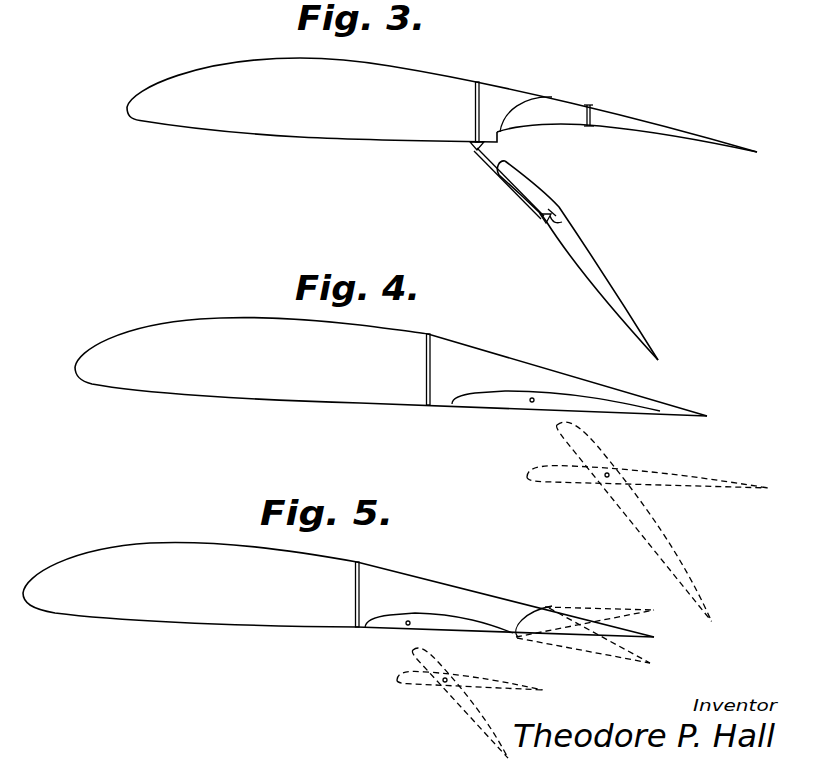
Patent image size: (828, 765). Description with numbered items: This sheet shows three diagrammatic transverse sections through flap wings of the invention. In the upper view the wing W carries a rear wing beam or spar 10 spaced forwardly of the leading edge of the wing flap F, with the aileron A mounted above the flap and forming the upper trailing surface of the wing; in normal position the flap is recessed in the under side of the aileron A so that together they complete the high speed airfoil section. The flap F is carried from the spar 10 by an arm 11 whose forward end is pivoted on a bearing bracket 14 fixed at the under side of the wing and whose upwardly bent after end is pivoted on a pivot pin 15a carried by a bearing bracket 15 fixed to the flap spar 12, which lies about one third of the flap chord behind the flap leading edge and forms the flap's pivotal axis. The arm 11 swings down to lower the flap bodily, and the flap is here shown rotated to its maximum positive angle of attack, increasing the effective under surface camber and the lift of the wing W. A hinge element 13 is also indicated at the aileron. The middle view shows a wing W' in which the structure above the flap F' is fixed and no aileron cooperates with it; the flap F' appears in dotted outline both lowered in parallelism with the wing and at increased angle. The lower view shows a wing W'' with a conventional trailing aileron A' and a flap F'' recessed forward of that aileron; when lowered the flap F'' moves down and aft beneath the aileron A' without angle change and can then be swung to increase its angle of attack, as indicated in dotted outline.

In FIG. 3, the wing W is at (442, 97).
In FIG. 3, the aileron A is at (627, 116).
In FIG. 3, the rear wing beam or spar 10 is at (475, 105).
In FIG. 3, the arm 11 is at (500, 178).
In FIG. 3, the spar 12 is at (552, 217).
In FIG. 3, the hinge 13 is at (567, 63).
In FIG. 3, the pivot or bearing bracket 14 is at (473, 147).
In FIG. 3, the bearing bracket 15 is at (541, 220).
In FIG. 3, the pivot pin 15a is at (548, 208).
In FIG. 3, the wing flap F is at (577, 260).
In FIG. 4, the wing W' is at (391, 363).
In FIG. 4, the wing flap F' is at (610, 507).
In FIG. 5, the wing W'' is at (338, 589).
In FIG. 5, the trailing aileron A' is at (585, 619).
In FIG. 5, the flap F'' is at (445, 686).